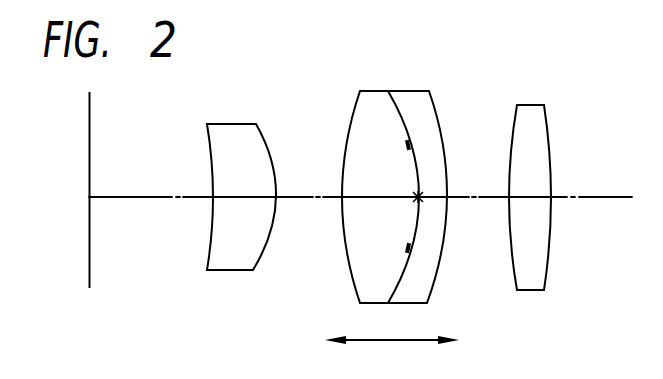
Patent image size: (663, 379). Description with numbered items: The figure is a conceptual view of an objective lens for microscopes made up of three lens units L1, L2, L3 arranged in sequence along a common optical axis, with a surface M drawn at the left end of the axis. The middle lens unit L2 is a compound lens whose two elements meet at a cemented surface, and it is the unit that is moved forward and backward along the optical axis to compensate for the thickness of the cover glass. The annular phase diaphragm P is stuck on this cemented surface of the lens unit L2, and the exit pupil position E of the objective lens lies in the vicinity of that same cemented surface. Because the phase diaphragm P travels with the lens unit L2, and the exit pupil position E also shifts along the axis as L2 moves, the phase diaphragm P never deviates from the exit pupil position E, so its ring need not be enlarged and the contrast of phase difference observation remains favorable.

The mirror M is at (89, 241).
The first lens unit L1 is at (260, 107).
The second lens unit L2 is at (430, 75).
The third lens unit L3 is at (555, 92).
The annular phase diaphragm P is at (410, 144).
The exit pupil position E is at (421, 194).